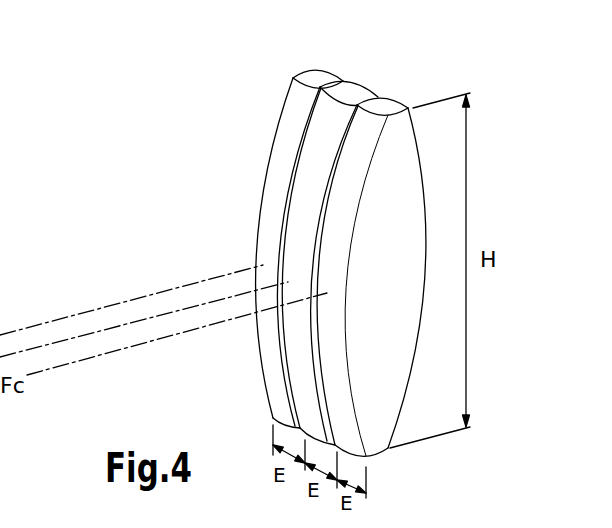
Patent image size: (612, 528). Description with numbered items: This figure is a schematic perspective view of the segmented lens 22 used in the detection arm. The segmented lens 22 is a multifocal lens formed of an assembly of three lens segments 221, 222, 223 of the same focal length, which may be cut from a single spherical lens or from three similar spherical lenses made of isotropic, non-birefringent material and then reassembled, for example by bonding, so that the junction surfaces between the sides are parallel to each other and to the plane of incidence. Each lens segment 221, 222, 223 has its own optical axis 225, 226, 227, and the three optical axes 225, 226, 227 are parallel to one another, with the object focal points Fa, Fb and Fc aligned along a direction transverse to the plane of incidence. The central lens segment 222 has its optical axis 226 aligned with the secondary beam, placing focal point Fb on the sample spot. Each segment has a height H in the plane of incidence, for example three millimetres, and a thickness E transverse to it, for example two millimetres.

The segmented lens 22 is at (250, 192).
The lens segment 221 is at (322, 80).
The lens segment 222 is at (358, 93).
The lens segment 223 is at (390, 107).
The optical axis 225 is at (68, 316).
The optical axis 226 is at (138, 321).
The optical axis 227 is at (128, 350).